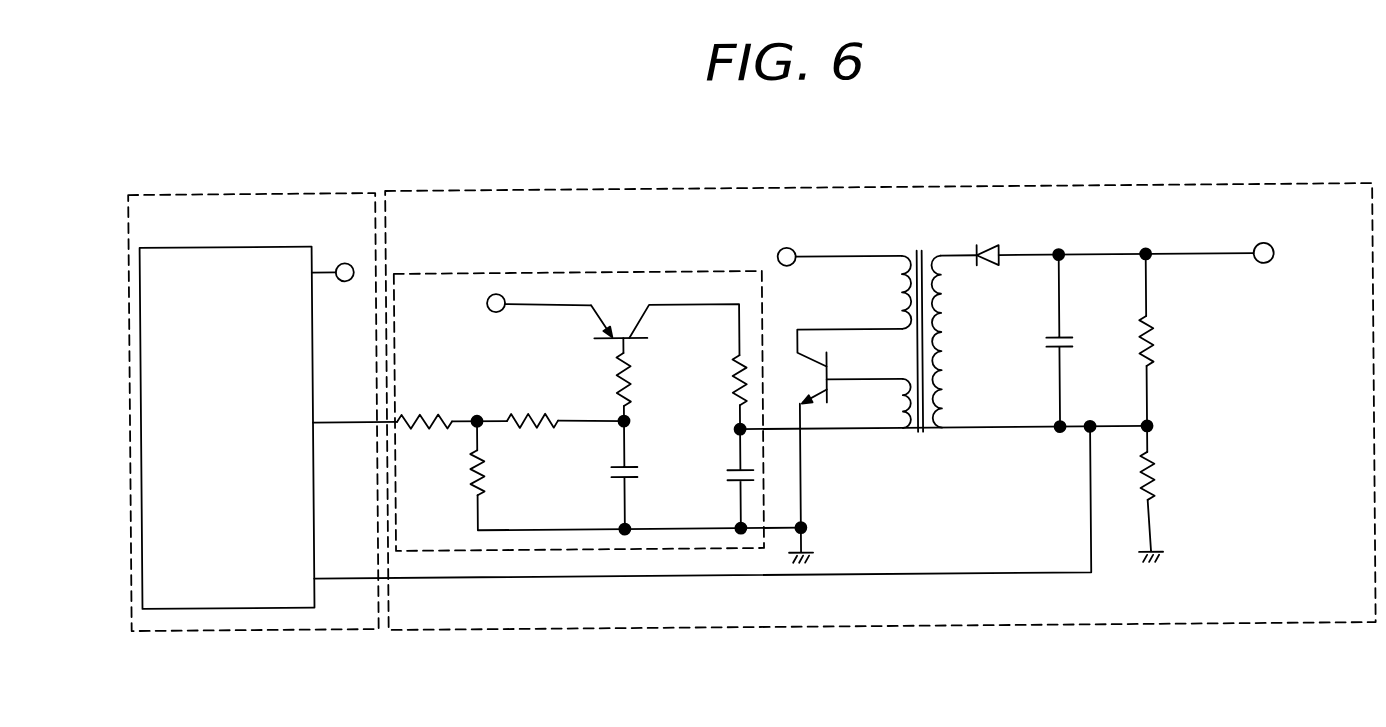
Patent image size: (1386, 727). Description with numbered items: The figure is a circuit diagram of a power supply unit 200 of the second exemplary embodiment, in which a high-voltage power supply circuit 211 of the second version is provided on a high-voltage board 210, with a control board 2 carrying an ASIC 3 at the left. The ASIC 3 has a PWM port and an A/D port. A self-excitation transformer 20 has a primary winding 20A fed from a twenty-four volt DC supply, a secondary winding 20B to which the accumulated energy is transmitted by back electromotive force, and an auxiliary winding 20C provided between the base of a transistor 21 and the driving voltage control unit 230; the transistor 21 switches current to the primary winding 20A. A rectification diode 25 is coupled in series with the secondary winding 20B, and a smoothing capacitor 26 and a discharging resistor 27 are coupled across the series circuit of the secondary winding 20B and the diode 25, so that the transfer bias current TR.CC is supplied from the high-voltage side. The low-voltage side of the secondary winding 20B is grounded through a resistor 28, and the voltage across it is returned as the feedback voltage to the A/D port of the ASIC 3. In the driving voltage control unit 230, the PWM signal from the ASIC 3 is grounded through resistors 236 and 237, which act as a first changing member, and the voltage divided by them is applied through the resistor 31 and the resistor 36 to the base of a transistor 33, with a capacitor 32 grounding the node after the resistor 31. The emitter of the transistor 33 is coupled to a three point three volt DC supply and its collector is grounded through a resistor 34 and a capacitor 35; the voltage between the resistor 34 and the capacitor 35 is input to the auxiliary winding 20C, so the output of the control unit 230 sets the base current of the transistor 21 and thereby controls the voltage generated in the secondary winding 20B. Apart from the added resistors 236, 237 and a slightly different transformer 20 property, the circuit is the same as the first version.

The control board 2 is at (272, 190).
The ASIC 3 is at (245, 243).
The power supply unit 200 is at (1027, 170).
The high-voltage board 210 is at (1132, 185).
The high-voltage power supply circuit 211 is at (1207, 360).
The driving voltage control unit 230 is at (535, 271).
The resistor 236 is at (430, 410).
The resistor 237 is at (468, 493).
The resistor 31 is at (508, 426).
The capacitor 32 is at (632, 462).
The transistor 33 is at (598, 345).
The resistor 34 is at (735, 360).
The capacitor 35 is at (735, 485).
The resistor 36 is at (633, 363).
The transformer 20 is at (923, 252).
The primary winding 20A is at (893, 302).
The secondary winding 20B is at (950, 340).
The auxiliary winding 20C is at (906, 437).
The transistor 21 is at (818, 414).
The rectification diode 25 is at (992, 245).
The smoothing capacitor 26 is at (1068, 340).
The discharging resistor 27 is at (1152, 320).
The resistor 28 is at (1152, 457).